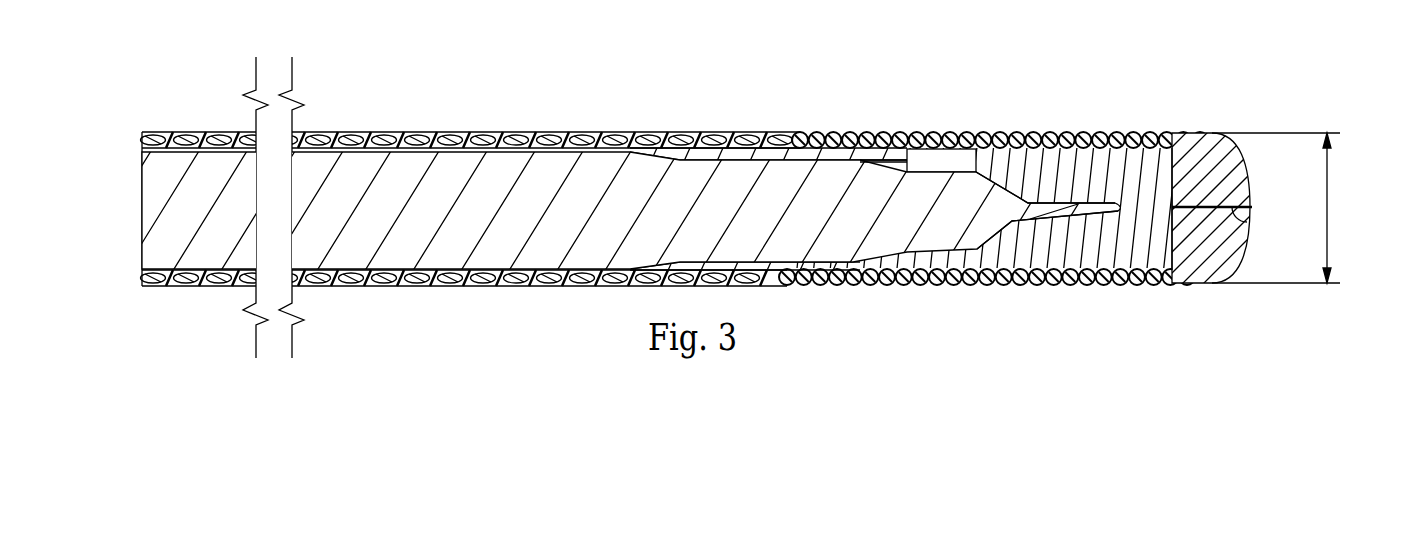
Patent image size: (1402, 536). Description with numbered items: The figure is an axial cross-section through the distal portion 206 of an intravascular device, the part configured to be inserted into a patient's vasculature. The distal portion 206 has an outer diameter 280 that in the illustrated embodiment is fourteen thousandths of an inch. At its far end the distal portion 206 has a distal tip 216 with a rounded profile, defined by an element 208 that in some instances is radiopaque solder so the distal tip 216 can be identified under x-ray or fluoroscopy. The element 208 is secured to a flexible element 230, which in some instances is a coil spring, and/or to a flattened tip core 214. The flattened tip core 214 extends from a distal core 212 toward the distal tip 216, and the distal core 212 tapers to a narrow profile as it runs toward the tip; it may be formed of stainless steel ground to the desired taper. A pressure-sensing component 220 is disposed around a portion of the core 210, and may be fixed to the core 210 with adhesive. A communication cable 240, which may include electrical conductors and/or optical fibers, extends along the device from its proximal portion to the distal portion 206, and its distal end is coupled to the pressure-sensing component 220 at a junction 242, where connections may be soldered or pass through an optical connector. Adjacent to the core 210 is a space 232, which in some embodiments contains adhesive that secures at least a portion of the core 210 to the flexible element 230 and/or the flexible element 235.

The distal portion 206 is at (1065, 67).
The element 208 is at (1207, 282).
The core 210 is at (543, 223).
The distal core 212 is at (982, 190).
The flattened tip core 214 is at (1248, 226).
The distal tip 216 is at (1257, 203).
The pressure-sensing component 220 is at (935, 157).
The flexible element 230 is at (1100, 284).
The space 232 is at (945, 258).
The flexible element 235 is at (565, 280).
The communication cable 240 is at (467, 148).
The junction 242 is at (903, 147).
The outer diameter 280 is at (1327, 207).